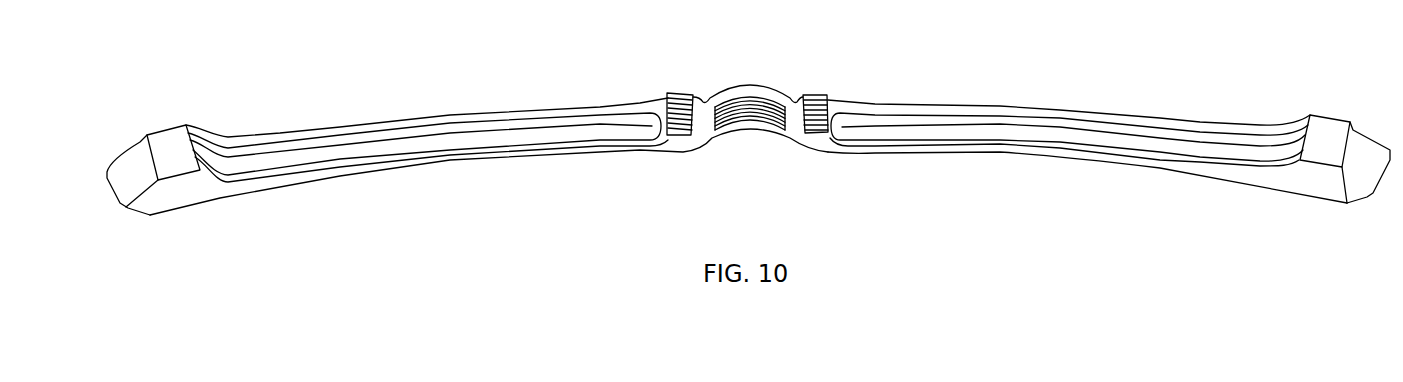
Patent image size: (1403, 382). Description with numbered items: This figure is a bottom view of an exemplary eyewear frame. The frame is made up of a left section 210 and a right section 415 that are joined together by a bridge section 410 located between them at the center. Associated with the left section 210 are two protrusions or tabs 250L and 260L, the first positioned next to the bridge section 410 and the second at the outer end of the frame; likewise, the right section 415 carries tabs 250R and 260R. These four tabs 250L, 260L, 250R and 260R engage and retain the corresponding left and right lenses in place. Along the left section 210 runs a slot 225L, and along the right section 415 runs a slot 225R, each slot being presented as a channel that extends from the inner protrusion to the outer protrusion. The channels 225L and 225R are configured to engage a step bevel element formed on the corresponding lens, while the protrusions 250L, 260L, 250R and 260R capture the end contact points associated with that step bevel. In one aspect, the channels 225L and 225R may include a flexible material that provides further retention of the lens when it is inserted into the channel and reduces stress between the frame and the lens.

The left section 210 is at (477, 138).
The slot 225L is at (577, 140).
The slot 225R is at (918, 133).
The tab 250L is at (670, 93).
The tab 250R is at (820, 93).
The tab 260L is at (170, 138).
The tab 260R is at (1327, 128).
The bridge section 410 is at (747, 117).
The right section 415 is at (1010, 153).